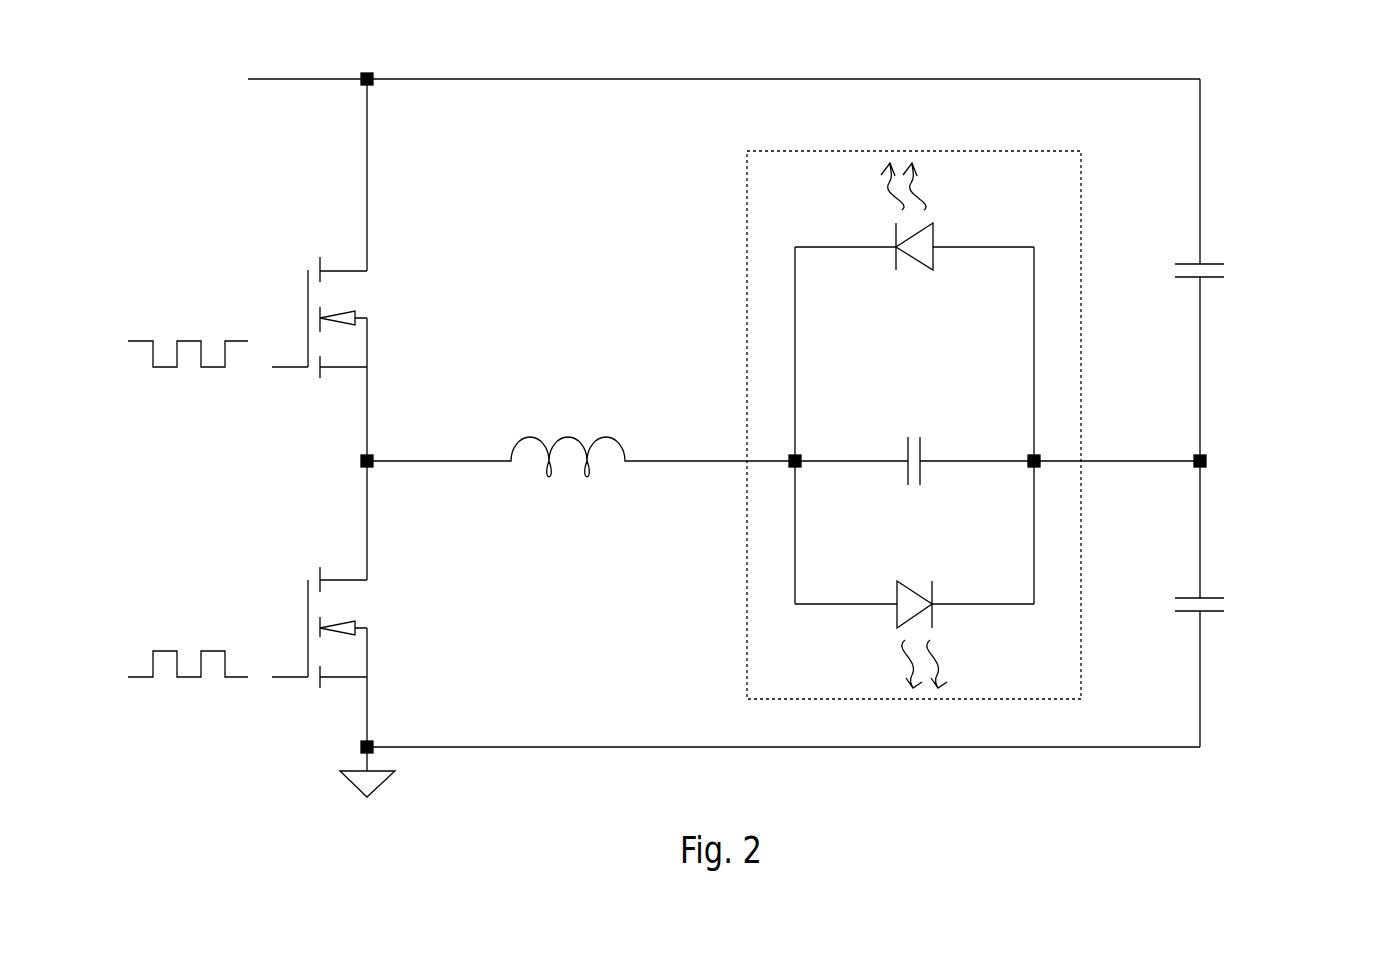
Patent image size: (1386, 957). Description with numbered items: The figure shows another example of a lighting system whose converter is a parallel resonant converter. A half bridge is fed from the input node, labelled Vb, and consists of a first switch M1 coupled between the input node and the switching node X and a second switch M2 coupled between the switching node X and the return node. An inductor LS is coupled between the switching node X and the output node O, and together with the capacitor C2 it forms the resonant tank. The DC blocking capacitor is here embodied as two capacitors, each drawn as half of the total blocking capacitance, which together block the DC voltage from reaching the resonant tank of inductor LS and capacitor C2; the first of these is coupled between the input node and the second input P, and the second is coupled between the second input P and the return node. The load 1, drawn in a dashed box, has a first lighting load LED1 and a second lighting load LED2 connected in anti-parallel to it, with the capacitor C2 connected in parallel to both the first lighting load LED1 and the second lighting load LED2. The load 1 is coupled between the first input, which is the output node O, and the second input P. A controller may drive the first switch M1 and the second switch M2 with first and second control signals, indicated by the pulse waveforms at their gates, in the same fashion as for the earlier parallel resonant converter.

The load 1 is at (892, 419).
The supply voltage Vb is at (682, 79).
The first switch M1 is at (290, 317).
The second switch M2 is at (294, 627).
The switching node X is at (414, 462).
The inductor LS is at (569, 422).
The output node O is at (715, 429).
The first lighting load LED1 is at (914, 600).
The second lighting load LED2 is at (914, 254).
The capacitor C2 is at (914, 426).
The second input P is at (1117, 429).